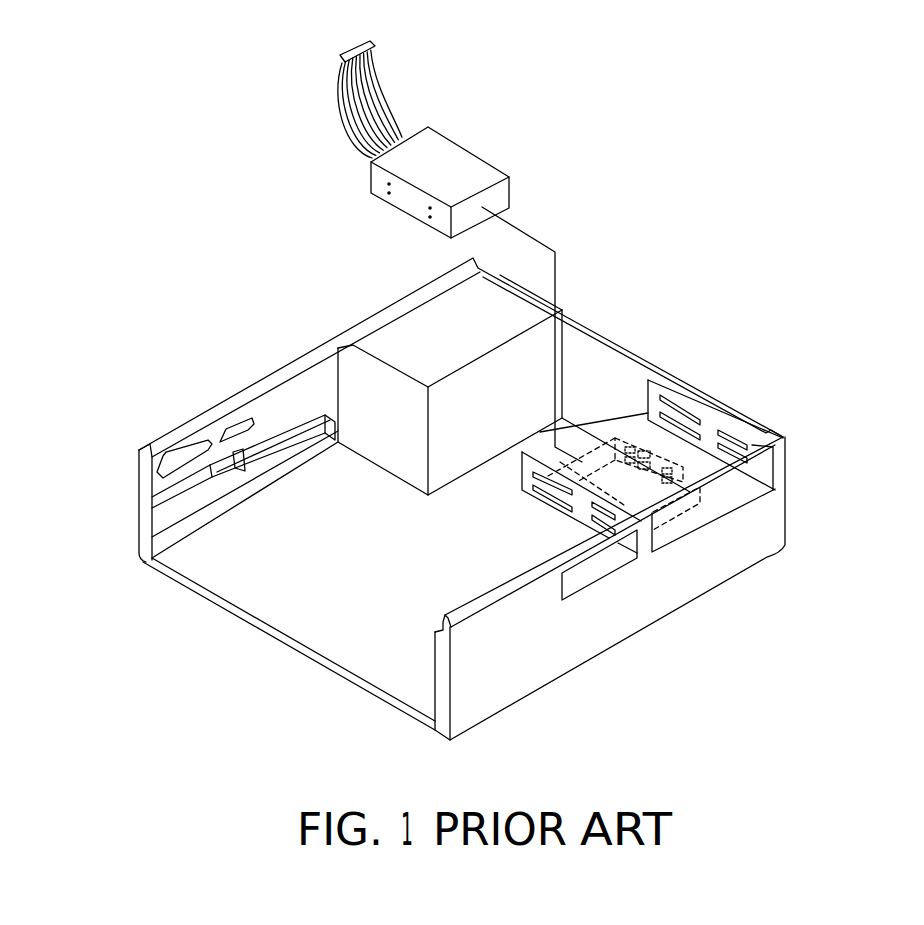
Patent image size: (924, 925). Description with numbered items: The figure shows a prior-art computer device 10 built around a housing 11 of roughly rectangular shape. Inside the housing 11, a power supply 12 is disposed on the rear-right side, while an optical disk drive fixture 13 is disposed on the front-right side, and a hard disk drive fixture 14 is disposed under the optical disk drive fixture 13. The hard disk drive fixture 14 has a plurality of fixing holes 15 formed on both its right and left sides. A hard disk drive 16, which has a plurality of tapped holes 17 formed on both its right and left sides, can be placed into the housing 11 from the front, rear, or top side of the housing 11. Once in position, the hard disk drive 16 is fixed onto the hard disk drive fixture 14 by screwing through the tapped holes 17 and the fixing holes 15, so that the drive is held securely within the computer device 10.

The computer device 10 is at (790, 172).
The housing 11 is at (285, 498).
The power supply 12 is at (423, 332).
The optical disk drive fixture 13 is at (582, 508).
The hard disk drive fixture 14 is at (678, 518).
The fixing holes 15 is at (643, 457).
The hard disk drive 16 is at (438, 147).
The tapped holes 17 is at (430, 210).